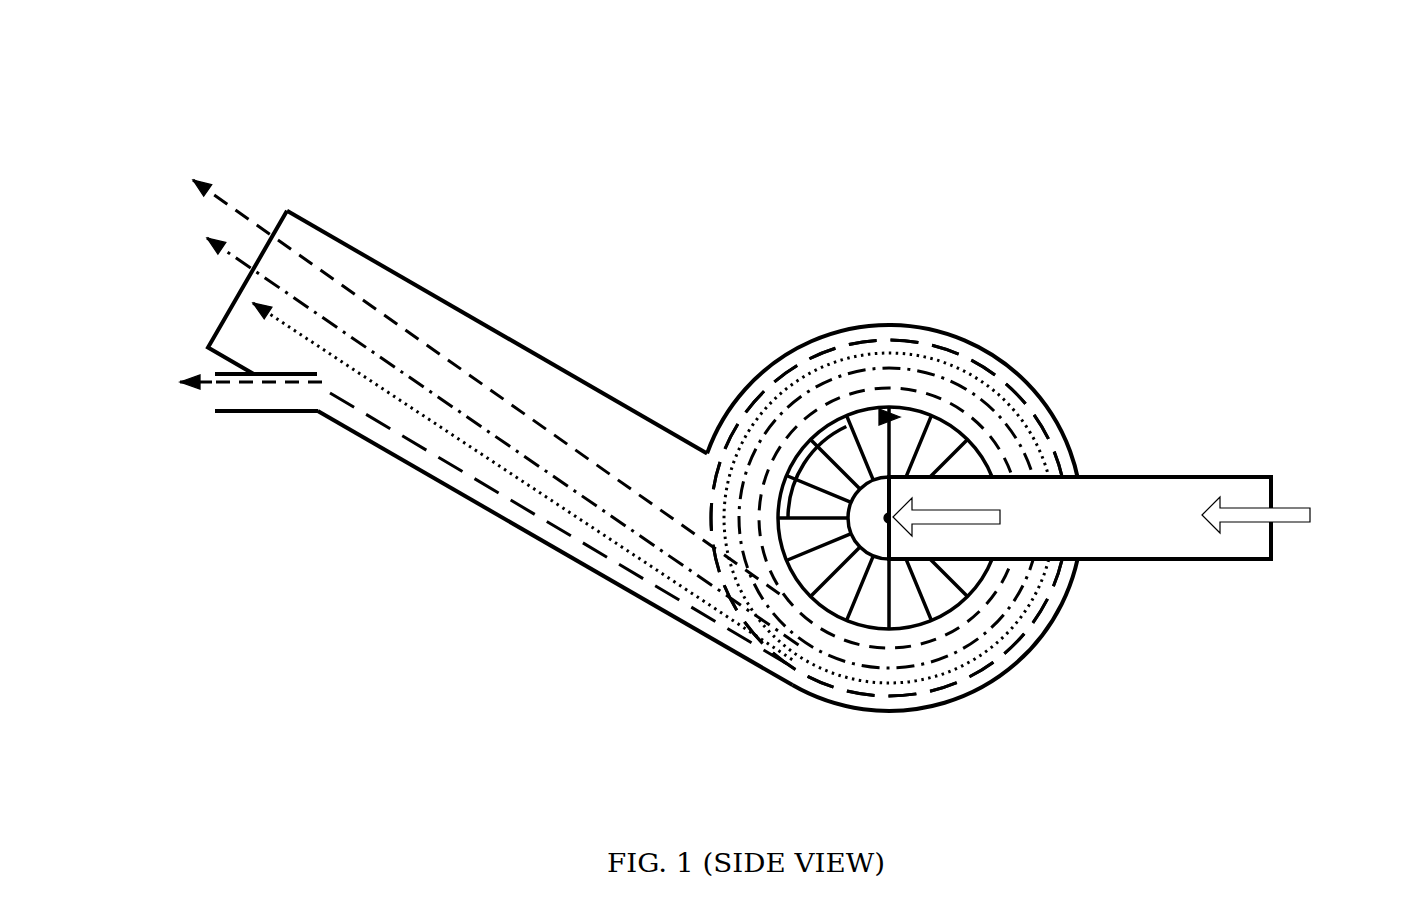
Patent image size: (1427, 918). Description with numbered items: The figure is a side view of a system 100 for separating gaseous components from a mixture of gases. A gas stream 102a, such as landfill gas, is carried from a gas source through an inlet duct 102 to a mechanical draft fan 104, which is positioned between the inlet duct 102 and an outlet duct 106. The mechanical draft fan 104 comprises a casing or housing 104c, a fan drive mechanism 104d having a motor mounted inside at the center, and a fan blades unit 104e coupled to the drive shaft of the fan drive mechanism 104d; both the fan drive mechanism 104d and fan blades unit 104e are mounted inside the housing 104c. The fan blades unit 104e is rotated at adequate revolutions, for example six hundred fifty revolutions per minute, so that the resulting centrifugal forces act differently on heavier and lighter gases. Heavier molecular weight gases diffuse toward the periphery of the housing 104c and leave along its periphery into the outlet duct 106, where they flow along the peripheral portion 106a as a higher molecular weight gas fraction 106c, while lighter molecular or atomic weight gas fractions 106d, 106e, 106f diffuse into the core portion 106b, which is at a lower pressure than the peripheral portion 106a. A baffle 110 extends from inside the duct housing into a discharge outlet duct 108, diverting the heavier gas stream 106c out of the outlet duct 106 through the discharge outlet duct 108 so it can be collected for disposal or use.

The system for separating gaseous components from a mixture of gases 100 is at (746, 387).
The inlet duct 102 is at (1147, 482).
The gas stream 102a is at (1282, 508).
The mechanical draft fan 104 is at (904, 485).
The casing/housing 104c is at (973, 340).
The fan drive mechanism 104d is at (873, 550).
The fan blades unit 104e is at (958, 447).
The outlet duct 106 is at (577, 378).
The peripheral portion of outlet duct 106a is at (668, 609).
The core portion of outlet duct 106b is at (660, 498).
The higher molecular weight gas fraction 106c is at (200, 374).
The lower molecular weight gas fraction 106d is at (255, 312).
The lower molecular weight gas fraction 106e is at (237, 253).
The lower molecular weight gas fraction 106f is at (197, 173).
The discharge outlet duct 108 is at (273, 413).
The baffle 110 is at (323, 387).